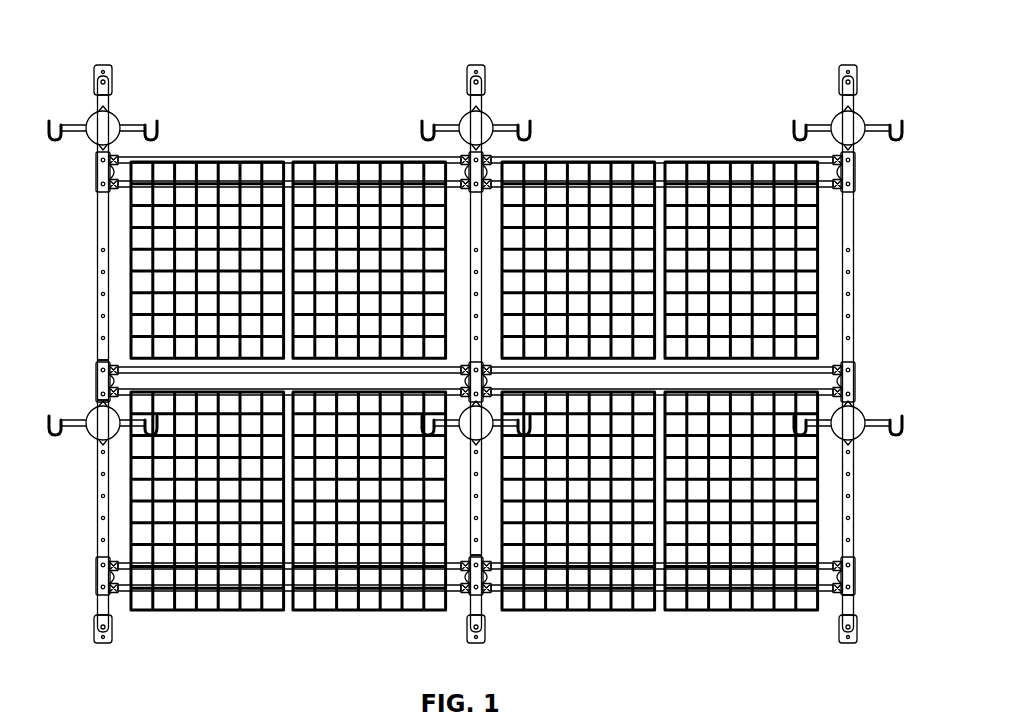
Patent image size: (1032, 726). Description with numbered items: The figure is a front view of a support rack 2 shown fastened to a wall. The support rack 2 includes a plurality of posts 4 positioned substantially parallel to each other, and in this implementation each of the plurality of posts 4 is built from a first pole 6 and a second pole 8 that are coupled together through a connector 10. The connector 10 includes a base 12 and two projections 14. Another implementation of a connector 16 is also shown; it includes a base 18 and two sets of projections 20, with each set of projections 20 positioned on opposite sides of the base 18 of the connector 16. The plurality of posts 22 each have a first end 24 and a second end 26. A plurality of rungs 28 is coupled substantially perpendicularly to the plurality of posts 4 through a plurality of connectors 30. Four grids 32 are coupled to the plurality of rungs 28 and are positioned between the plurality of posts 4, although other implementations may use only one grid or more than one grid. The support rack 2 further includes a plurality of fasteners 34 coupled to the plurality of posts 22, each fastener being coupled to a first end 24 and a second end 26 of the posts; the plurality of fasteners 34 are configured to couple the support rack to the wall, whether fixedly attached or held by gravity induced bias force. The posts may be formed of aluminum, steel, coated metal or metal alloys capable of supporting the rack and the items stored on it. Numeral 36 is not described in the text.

The support rack 2 is at (105, 30).
The plurality of posts 4 is at (77, 354).
The first pole 6 is at (99, 302).
The second pole 8 is at (99, 515).
The connector 10 is at (97, 382).
The base 12 is at (862, 390).
The projections 14 is at (855, 372).
The connector 16 is at (481, 592).
The base 18 is at (466, 580).
The sets of projections 20 is at (494, 582).
The plurality of posts 22 is at (846, 364).
The first end 24 is at (860, 640).
The second end 26 is at (863, 112).
The plurality of rungs 28 is at (475, 137).
The plurality of connectors 30 is at (490, 160).
The grids 32 is at (355, 205).
The plurality of fasteners 34 is at (840, 628).
The floor 36 is at (50, 722).